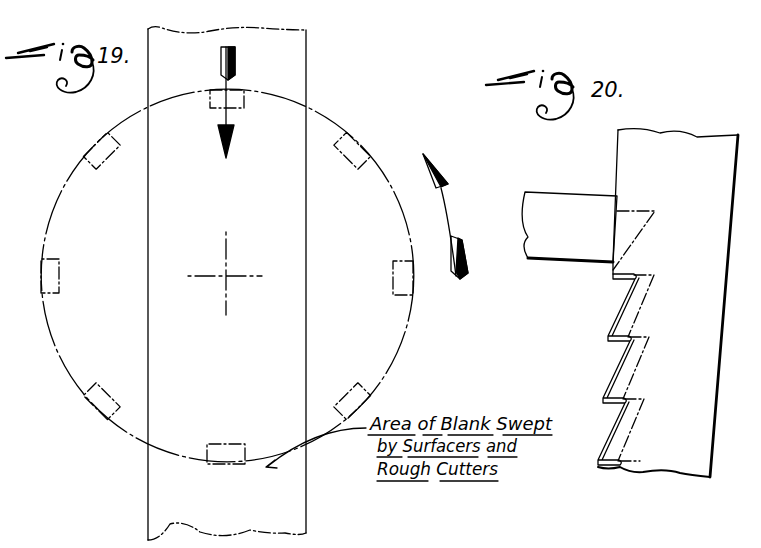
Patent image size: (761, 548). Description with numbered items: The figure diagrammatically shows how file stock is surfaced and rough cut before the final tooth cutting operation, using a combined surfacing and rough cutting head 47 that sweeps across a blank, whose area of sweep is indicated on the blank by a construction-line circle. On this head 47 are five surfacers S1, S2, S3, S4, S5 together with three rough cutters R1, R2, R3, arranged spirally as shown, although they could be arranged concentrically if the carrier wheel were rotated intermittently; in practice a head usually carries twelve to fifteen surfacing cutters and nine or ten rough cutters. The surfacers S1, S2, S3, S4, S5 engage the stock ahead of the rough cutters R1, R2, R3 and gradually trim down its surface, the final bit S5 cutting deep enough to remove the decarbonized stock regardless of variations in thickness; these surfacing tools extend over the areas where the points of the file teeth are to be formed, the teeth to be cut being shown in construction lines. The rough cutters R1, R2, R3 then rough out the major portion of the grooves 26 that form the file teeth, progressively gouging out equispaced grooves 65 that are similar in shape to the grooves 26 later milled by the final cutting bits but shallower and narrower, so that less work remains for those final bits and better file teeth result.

In FIG. 19, the rough cutter R1 is at (40, 282).
In FIG. 19, the rough cutter R2 is at (101, 147).
In FIG. 19, the rough cutter R3 is at (241, 97).
In FIG. 19, the surfacer S1 is at (356, 147).
In FIG. 19, the surfacer S2 is at (410, 285).
In FIG. 19, the surfacer S3 is at (366, 410).
In FIG. 19, the surfacer S4 is at (234, 461).
In FIG. 19, the surfacer S5 is at (100, 416).
In FIG. 20, the surfacer S5 is at (563, 196).
In FIG. 19, the combined surfacing and rough cutting head 47 is at (405, 140).
In FIG. 20, the equispaced grooves 65 is at (622, 295).
In FIG. 20, the arcuate grooves 26 is at (626, 304).